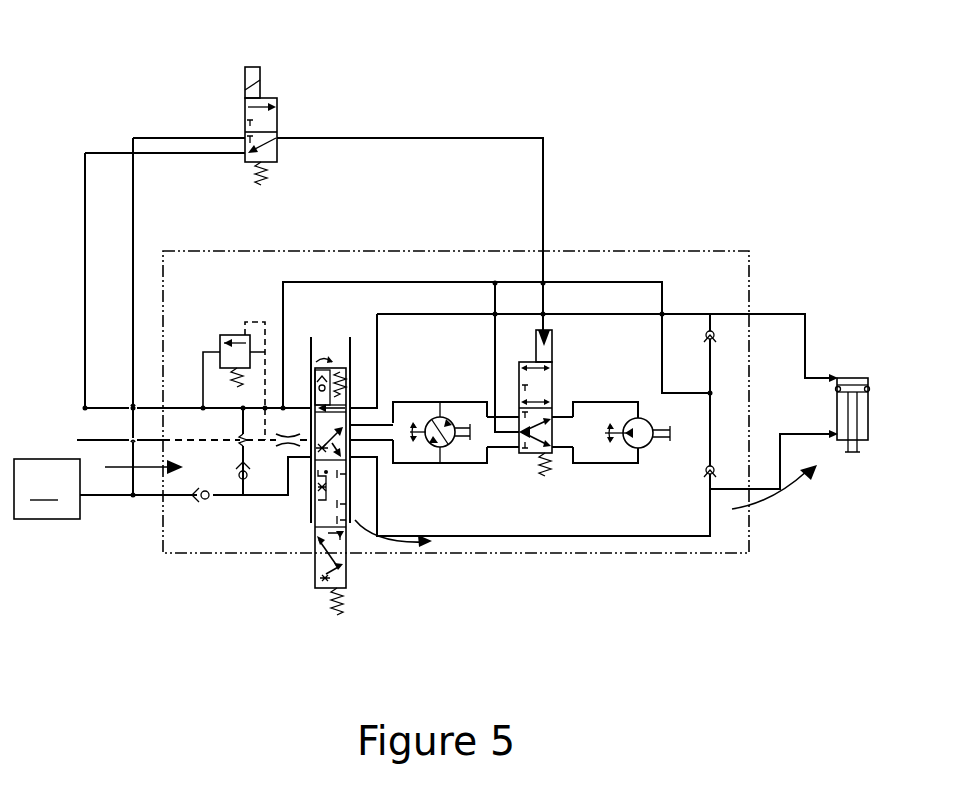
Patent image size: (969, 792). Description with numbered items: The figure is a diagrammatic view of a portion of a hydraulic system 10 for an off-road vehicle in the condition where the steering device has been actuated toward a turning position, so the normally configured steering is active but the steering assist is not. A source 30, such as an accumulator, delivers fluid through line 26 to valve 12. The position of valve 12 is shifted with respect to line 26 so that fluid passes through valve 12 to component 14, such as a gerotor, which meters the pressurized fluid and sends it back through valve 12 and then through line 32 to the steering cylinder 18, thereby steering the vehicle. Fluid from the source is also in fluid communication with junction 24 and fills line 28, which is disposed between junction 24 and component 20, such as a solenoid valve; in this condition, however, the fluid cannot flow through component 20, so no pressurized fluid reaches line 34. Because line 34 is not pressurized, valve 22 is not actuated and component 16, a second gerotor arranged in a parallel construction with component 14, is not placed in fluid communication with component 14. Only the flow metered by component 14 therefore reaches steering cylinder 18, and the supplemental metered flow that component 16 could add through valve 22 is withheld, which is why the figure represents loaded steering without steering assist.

The hydraulic system 10 is at (565, 106).
The valve 12 is at (313, 562).
The component 14 is at (445, 400).
The component 16 is at (610, 400).
The steering cylinder 18 is at (868, 410).
The component 20 is at (277, 120).
The valve 22 is at (528, 460).
The junction 24 is at (131, 497).
The line 26 is at (174, 495).
The line 28 is at (133, 220).
The source 30 is at (47, 489).
The line 32 is at (647, 537).
The line 34 is at (430, 135).